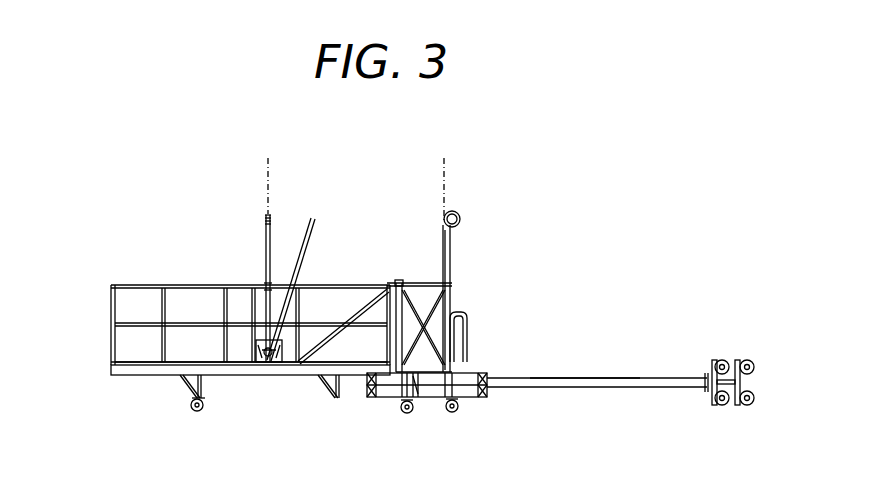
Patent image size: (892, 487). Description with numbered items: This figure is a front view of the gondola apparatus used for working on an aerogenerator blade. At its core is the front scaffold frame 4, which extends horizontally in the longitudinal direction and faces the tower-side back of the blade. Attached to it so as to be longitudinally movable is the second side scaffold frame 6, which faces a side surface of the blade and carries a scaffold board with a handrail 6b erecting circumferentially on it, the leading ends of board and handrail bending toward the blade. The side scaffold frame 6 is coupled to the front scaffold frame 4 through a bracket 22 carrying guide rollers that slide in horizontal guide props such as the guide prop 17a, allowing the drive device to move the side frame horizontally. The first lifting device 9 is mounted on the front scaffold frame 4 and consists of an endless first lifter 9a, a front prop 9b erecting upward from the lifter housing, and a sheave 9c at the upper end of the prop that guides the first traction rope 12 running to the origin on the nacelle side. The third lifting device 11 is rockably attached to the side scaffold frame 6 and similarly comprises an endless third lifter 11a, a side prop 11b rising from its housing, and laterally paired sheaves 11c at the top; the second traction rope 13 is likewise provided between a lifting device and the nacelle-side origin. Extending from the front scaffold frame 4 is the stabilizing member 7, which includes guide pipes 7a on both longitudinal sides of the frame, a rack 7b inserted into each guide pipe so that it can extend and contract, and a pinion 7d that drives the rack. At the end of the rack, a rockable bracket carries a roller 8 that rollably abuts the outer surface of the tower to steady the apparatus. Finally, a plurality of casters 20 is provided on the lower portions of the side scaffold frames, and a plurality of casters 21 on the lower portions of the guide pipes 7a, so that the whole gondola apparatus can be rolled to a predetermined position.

The front scaffold frame 4 is at (462, 283).
The second side scaffold frame 6 is at (113, 283).
The handrail 6b is at (172, 285).
The stabilizing member 7 is at (622, 378).
The guide pipe 7a is at (470, 373).
The rack 7b is at (568, 378).
The pinion 7d is at (420, 388).
The roller 8 is at (737, 362).
The first lifting device 9 is at (470, 318).
The first lifter 9a is at (460, 340).
The front prop 9b is at (451, 258).
The sheave 9c is at (459, 213).
The third lifting device 11 is at (265, 255).
The third lifter 11a is at (268, 365).
The side prop 11b is at (265, 286).
The sheaves 11c is at (265, 216).
The first traction rope 12 is at (442, 170).
The second traction rope 13 is at (266, 170).
The horizontal guide prop 17a is at (398, 281).
The casters 20 is at (205, 412).
The casters 21 is at (460, 412).
The bracket 22 is at (387, 287).